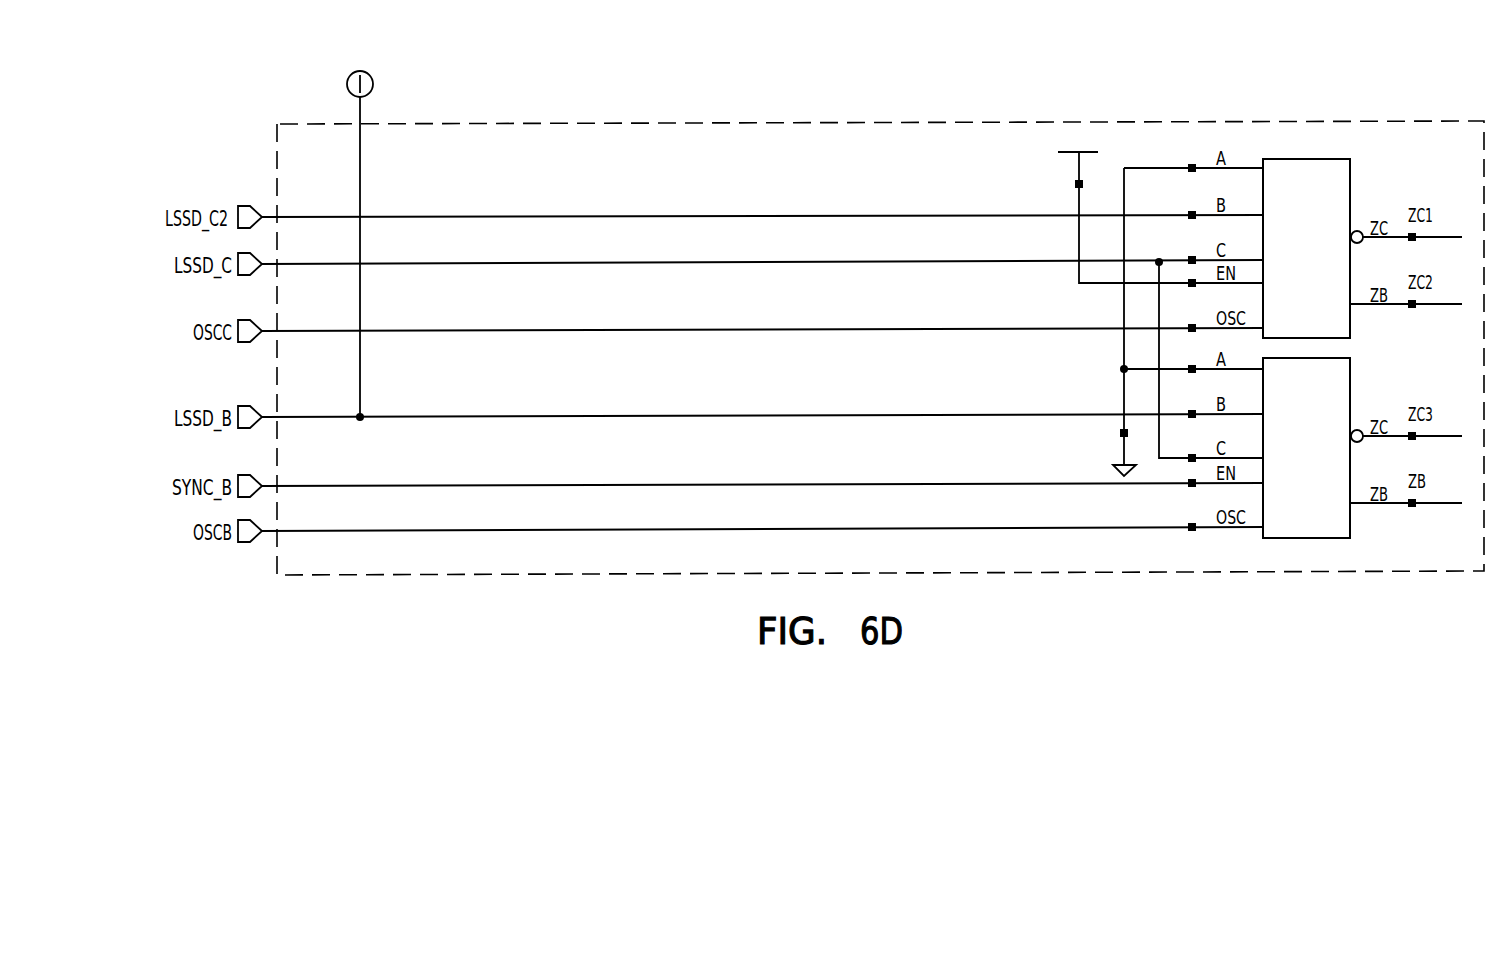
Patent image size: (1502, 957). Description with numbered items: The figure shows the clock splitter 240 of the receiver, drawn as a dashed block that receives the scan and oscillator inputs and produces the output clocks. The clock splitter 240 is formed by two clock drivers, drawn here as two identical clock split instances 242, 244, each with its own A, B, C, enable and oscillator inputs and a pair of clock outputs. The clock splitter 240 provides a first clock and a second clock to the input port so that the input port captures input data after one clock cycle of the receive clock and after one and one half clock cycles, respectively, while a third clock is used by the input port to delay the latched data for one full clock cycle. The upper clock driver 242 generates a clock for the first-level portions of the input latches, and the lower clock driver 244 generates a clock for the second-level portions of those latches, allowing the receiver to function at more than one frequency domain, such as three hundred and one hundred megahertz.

The clock splitter 240 is at (946, 121).
The CLKSPLIT instance CLKC (unnumbered on sheet) 242 is at (1306, 248).
The CLKSPLIT instance CLKB (unnumbered on sheet) 244 is at (1306, 448).